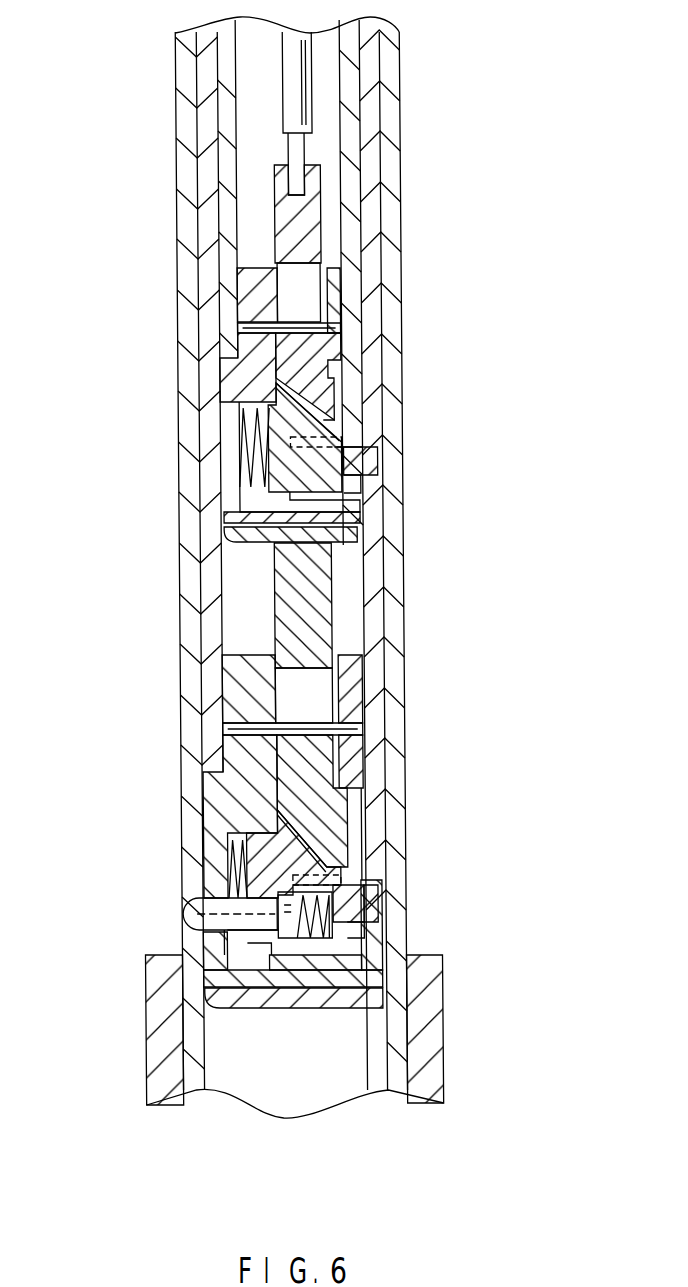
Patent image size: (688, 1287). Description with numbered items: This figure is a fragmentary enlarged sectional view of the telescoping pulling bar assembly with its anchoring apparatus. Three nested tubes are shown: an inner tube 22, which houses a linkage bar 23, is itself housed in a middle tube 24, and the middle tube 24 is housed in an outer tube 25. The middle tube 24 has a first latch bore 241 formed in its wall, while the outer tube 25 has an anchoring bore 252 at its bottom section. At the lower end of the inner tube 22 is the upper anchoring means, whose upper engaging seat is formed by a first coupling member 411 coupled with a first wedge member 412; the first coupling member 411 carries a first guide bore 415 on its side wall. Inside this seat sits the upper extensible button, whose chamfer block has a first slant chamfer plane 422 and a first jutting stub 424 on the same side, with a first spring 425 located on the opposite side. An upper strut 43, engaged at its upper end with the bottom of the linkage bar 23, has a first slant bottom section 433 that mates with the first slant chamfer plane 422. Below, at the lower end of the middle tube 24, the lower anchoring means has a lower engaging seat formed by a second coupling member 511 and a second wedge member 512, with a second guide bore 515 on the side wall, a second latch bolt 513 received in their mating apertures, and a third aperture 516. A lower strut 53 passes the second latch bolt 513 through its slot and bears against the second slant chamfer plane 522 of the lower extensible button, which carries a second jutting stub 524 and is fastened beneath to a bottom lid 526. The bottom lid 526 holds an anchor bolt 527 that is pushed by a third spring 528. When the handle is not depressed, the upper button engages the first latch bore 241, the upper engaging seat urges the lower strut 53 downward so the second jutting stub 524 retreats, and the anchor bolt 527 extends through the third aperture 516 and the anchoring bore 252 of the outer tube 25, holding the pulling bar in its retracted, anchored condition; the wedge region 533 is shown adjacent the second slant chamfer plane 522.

The inner tube 22 is at (232, 70).
The linkage bar 23 is at (305, 87).
The middle tube 24 is at (205, 163).
The outer tube 25 is at (185, 372).
The upper strut 43 is at (315, 218).
The first coupling member 411 is at (337, 287).
The first wedge member 412 is at (249, 293).
The second latch bolt 513 is at (340, 328).
The first slant chamfer plane 422 is at (340, 420).
The first jutting stub 424 is at (367, 474).
The first slant bottom section 433 is at (280, 398).
The first spring 425 is at (244, 455).
The first latch bore 241 is at (367, 463).
The first guide bore 415 is at (362, 508).
The lower strut 53 is at (330, 600).
The second wedge member 512 is at (228, 687).
The second coupling member 511 is at (364, 678).
The second slant chamfer plane 522 is at (319, 807).
The wedge 533 is at (310, 848).
The third aperture 516 is at (230, 897).
The anchor bolt 527 is at (198, 908).
The third spring 528 is at (305, 900).
The second jutting stub 524 is at (367, 903).
The second guide bore 515 is at (380, 888).
The anchoring bore 252 is at (205, 932).
The bottom lid 526 is at (266, 935).